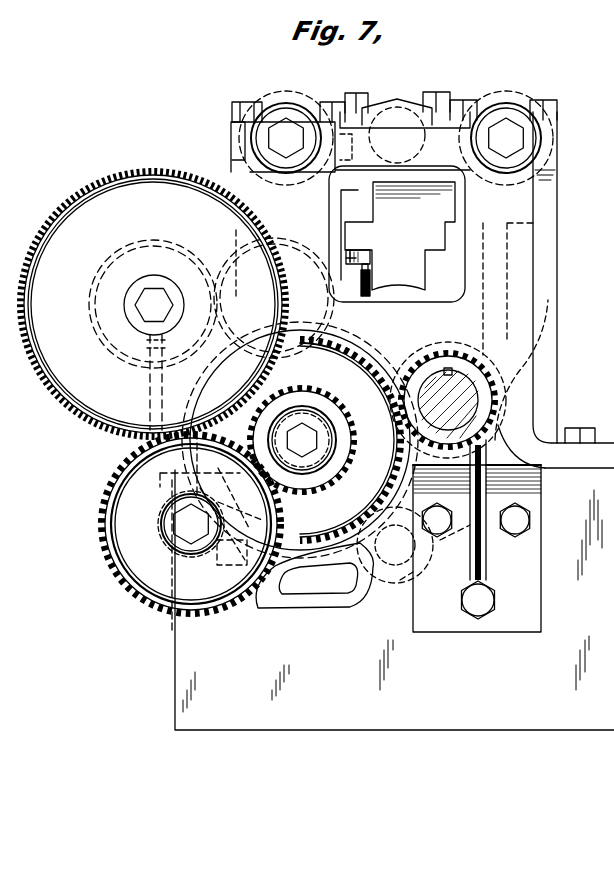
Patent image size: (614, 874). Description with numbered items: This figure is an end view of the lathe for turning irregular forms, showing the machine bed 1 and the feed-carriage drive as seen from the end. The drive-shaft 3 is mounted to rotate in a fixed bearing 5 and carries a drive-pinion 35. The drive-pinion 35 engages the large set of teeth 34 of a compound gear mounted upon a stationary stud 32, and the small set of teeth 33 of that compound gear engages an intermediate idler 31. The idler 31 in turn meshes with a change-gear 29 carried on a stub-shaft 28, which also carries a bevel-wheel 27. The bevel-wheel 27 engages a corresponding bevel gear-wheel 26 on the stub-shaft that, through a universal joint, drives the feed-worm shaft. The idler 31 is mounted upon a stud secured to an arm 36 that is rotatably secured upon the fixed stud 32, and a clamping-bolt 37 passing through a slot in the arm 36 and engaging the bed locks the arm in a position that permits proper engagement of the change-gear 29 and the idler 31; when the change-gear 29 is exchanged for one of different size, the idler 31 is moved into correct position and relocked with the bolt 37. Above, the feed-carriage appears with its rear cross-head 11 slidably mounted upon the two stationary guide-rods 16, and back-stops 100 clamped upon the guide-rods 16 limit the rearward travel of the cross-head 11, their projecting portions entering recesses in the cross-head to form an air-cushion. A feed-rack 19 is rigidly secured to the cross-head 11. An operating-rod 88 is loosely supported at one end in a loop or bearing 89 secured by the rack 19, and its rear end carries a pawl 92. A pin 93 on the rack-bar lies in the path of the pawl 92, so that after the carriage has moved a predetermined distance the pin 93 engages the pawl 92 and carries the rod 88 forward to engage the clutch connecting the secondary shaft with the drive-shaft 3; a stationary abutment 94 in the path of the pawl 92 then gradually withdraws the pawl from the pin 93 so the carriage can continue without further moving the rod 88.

The bed 1 is at (394, 599).
The drive-shaft 3 is at (470, 405).
The fixed bearing 5 is at (472, 528).
The rear cross-head 11 is at (298, 110).
The stationary guide-rods 16 is at (396, 138).
The feed-rack 19 is at (397, 234).
The bevel gear-wheel 26 is at (292, 343).
The bevel-wheel 27 is at (158, 372).
The stub-shaft 28 is at (150, 313).
The change-gear 29 is at (82, 400).
The intermediate idler 31 is at (118, 565).
The stationary stud 32 is at (375, 370).
The small set of teeth 33 is at (320, 400).
The large set of teeth 34 is at (352, 350).
The drive-pinion 35 is at (478, 362).
The arm 36 is at (350, 600).
The clamping-bolt 37 is at (270, 598).
The operating-rod 88 is at (350, 248).
The loop or bearing 89 is at (346, 258).
The pawl 92 is at (362, 256).
The pin 93 is at (360, 270).
The stationary abutment 94 is at (372, 288).
The back-stops 100 is at (245, 118).